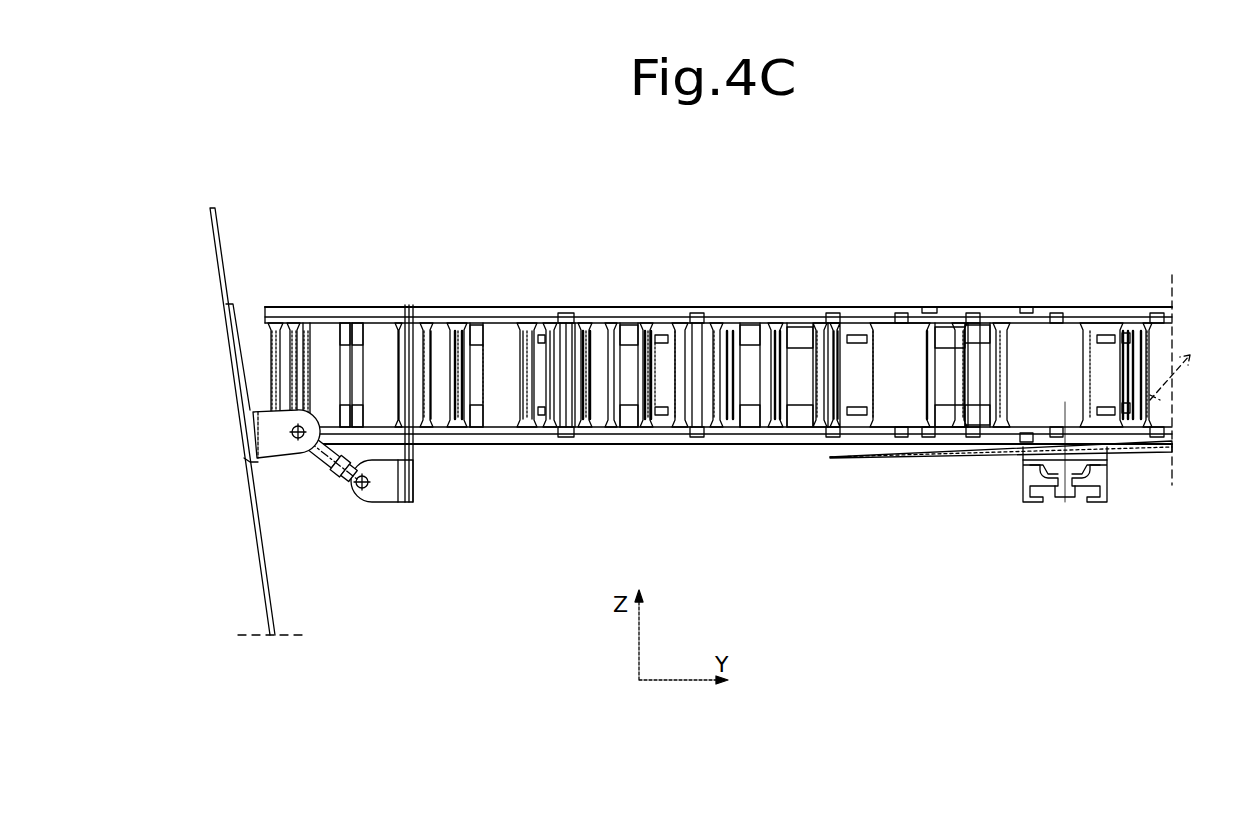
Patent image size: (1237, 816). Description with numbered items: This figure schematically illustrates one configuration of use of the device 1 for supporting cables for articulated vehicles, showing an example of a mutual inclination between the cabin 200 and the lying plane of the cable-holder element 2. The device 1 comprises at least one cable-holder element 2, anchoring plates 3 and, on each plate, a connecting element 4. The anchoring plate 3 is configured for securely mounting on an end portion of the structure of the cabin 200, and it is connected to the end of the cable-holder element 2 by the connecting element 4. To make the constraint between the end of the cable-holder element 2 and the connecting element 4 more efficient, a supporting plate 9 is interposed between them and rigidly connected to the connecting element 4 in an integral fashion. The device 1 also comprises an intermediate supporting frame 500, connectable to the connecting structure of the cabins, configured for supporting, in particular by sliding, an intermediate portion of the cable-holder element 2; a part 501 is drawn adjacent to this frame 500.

The device for supporting cables 1 is at (721, 478).
The cable-holder element 2 is at (350, 306).
The anchoring plate 3 is at (232, 305).
The connecting element 4 is at (335, 504).
The supporting plate 9 is at (415, 483).
The cabin 200 is at (218, 217).
The intermediate supporting frame 500 is at (1042, 504).
The wedge plate 501 is at (870, 460).